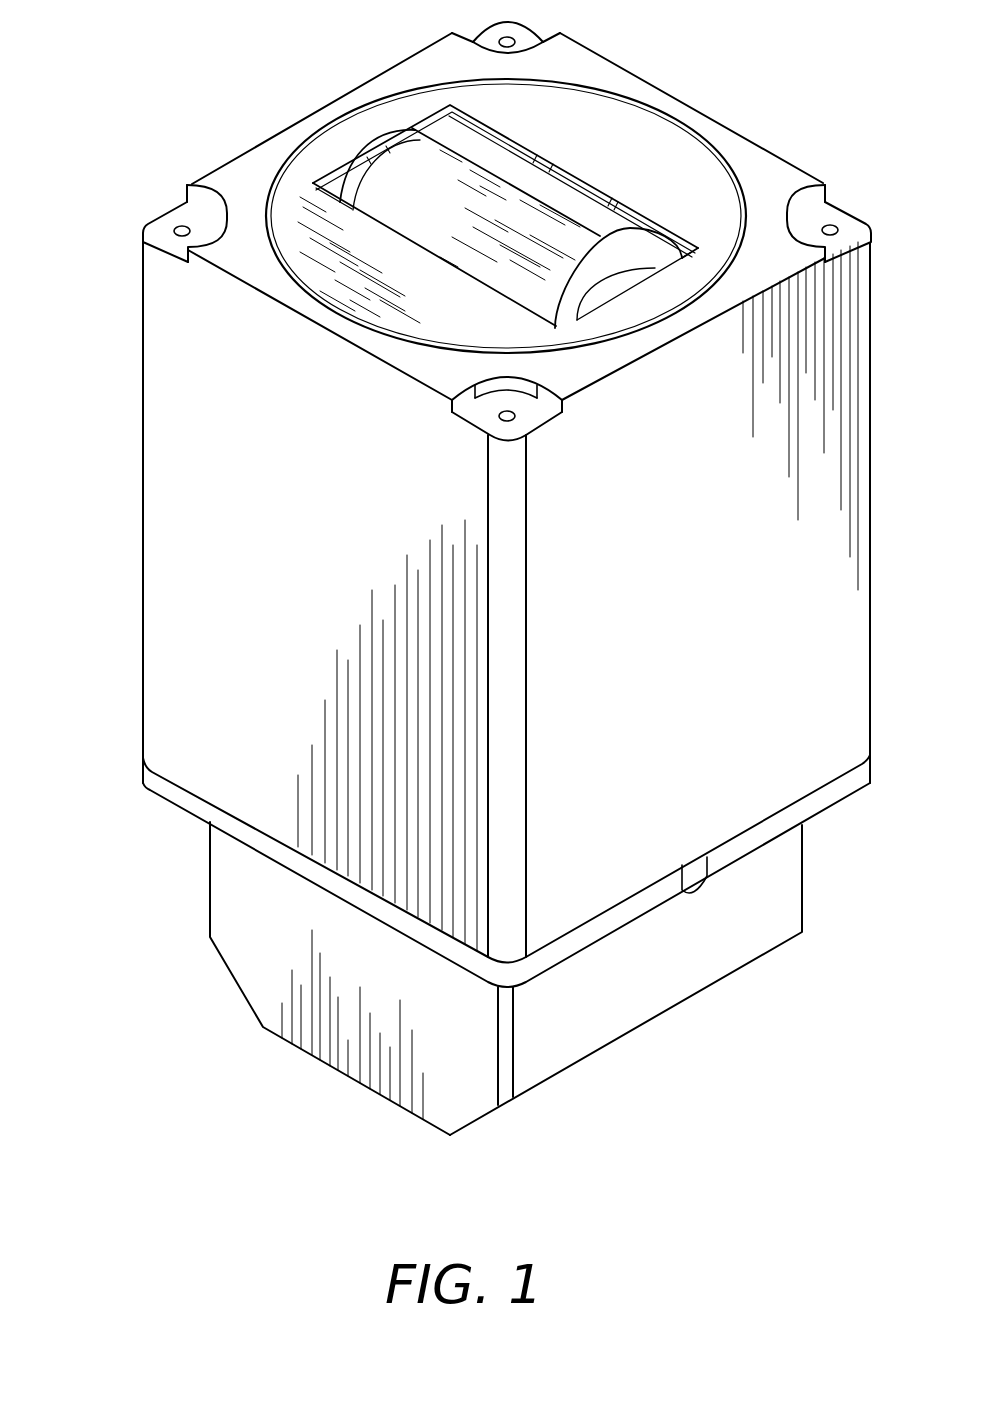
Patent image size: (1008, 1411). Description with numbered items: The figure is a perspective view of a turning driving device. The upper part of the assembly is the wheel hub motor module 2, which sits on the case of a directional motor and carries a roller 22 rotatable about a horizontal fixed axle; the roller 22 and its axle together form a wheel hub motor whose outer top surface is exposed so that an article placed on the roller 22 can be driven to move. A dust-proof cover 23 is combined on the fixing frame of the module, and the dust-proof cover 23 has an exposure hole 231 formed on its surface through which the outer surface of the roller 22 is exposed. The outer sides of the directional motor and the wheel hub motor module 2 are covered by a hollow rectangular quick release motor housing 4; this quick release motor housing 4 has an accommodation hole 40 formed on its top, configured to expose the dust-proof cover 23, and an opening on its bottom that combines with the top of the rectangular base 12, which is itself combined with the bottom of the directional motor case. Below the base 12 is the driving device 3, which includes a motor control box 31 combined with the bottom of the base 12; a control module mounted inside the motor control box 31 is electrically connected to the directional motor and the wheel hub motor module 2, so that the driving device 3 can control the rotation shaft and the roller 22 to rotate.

The wheel hub motor module 2 is at (801, 99).
The dust-proof cover 23 is at (647, 137).
The exposure hole 231 is at (523, 147).
The roller 22 is at (577, 230).
The accommodation hole 40 is at (343, 113).
The quick release motor housing 4 is at (126, 589).
The base 12 is at (207, 805).
The driving device 3 is at (597, 1068).
The motor control box 31 is at (722, 940).